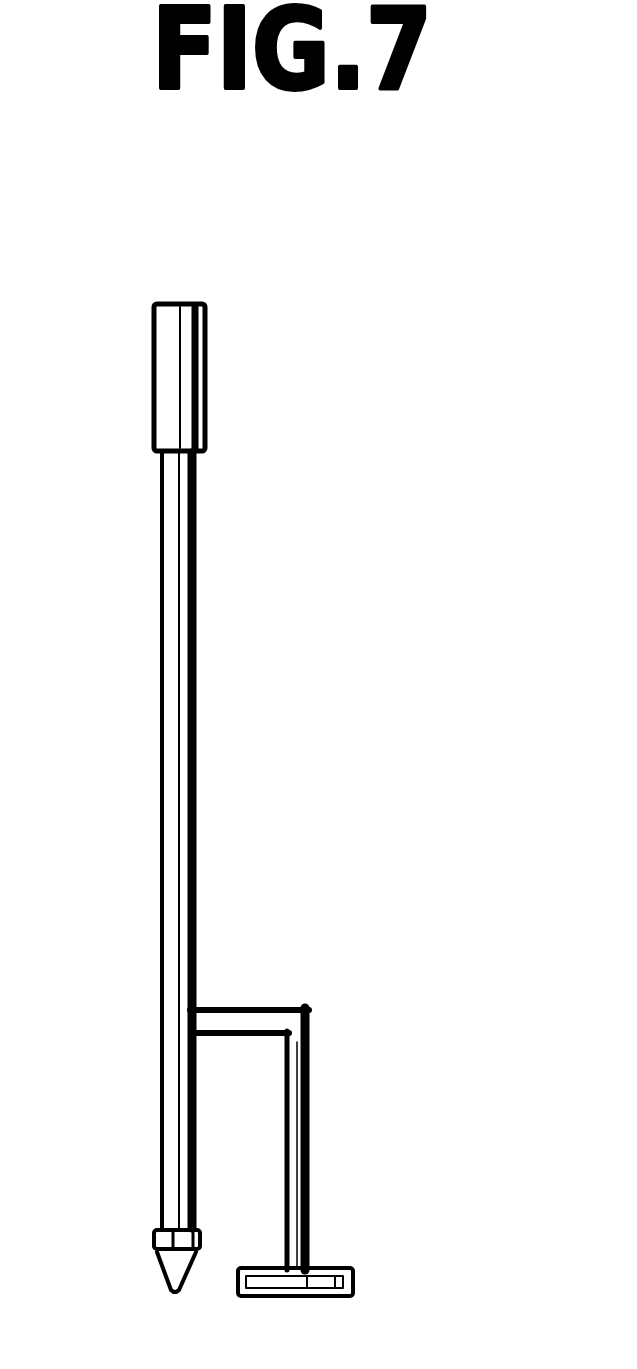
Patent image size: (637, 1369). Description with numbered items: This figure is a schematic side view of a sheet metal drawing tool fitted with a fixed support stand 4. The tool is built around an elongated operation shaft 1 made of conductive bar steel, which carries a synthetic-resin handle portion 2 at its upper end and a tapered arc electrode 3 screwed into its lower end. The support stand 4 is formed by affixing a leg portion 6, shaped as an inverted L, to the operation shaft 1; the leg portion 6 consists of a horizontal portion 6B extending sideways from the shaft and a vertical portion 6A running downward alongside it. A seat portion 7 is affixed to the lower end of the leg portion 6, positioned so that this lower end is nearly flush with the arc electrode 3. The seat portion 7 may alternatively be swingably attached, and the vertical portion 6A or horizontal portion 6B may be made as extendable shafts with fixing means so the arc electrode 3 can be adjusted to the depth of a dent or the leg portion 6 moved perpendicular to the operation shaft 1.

The operation shaft 1 is at (181, 712).
The handle portion 2 is at (208, 397).
The arc electrode 3 is at (157, 1263).
The support stand 4 is at (455, 1105).
The leg portion 6 is at (300, 1077).
The vertical portion 6A is at (310, 1175).
The horizontal portion 6B is at (248, 1010).
The seat portion 7 is at (355, 1278).